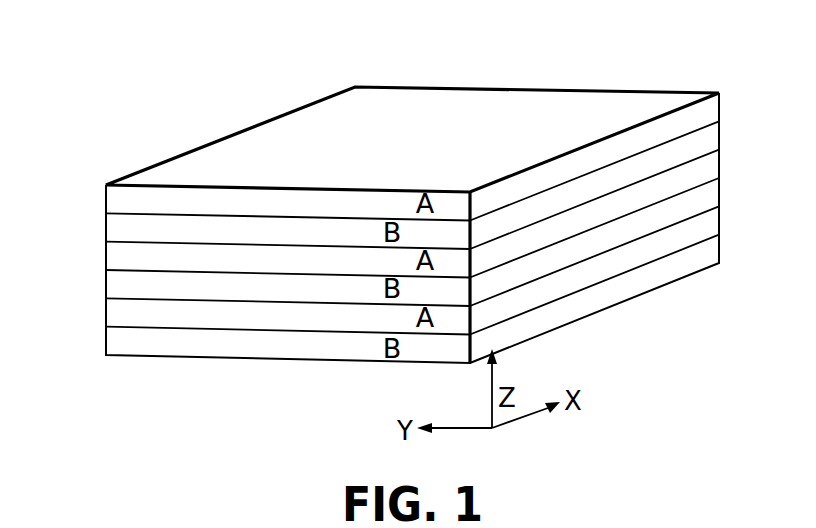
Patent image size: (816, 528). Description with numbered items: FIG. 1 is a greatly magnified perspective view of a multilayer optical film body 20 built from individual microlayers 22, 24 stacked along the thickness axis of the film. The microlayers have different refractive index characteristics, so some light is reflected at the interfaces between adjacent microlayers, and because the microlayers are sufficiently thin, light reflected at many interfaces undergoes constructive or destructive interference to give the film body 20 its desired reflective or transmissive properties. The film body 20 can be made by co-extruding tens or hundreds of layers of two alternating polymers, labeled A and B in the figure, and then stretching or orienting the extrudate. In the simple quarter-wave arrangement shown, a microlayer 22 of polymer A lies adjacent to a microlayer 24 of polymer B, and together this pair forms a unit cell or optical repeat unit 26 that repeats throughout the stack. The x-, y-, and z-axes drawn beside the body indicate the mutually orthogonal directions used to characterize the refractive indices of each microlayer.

The multilayer optical film body 20 is at (620, 42).
The microlayer of polymer A 22 is at (142, 250).
The microlayer of polymer B 24 is at (132, 287).
The optical repeat unit 26 is at (100, 242).